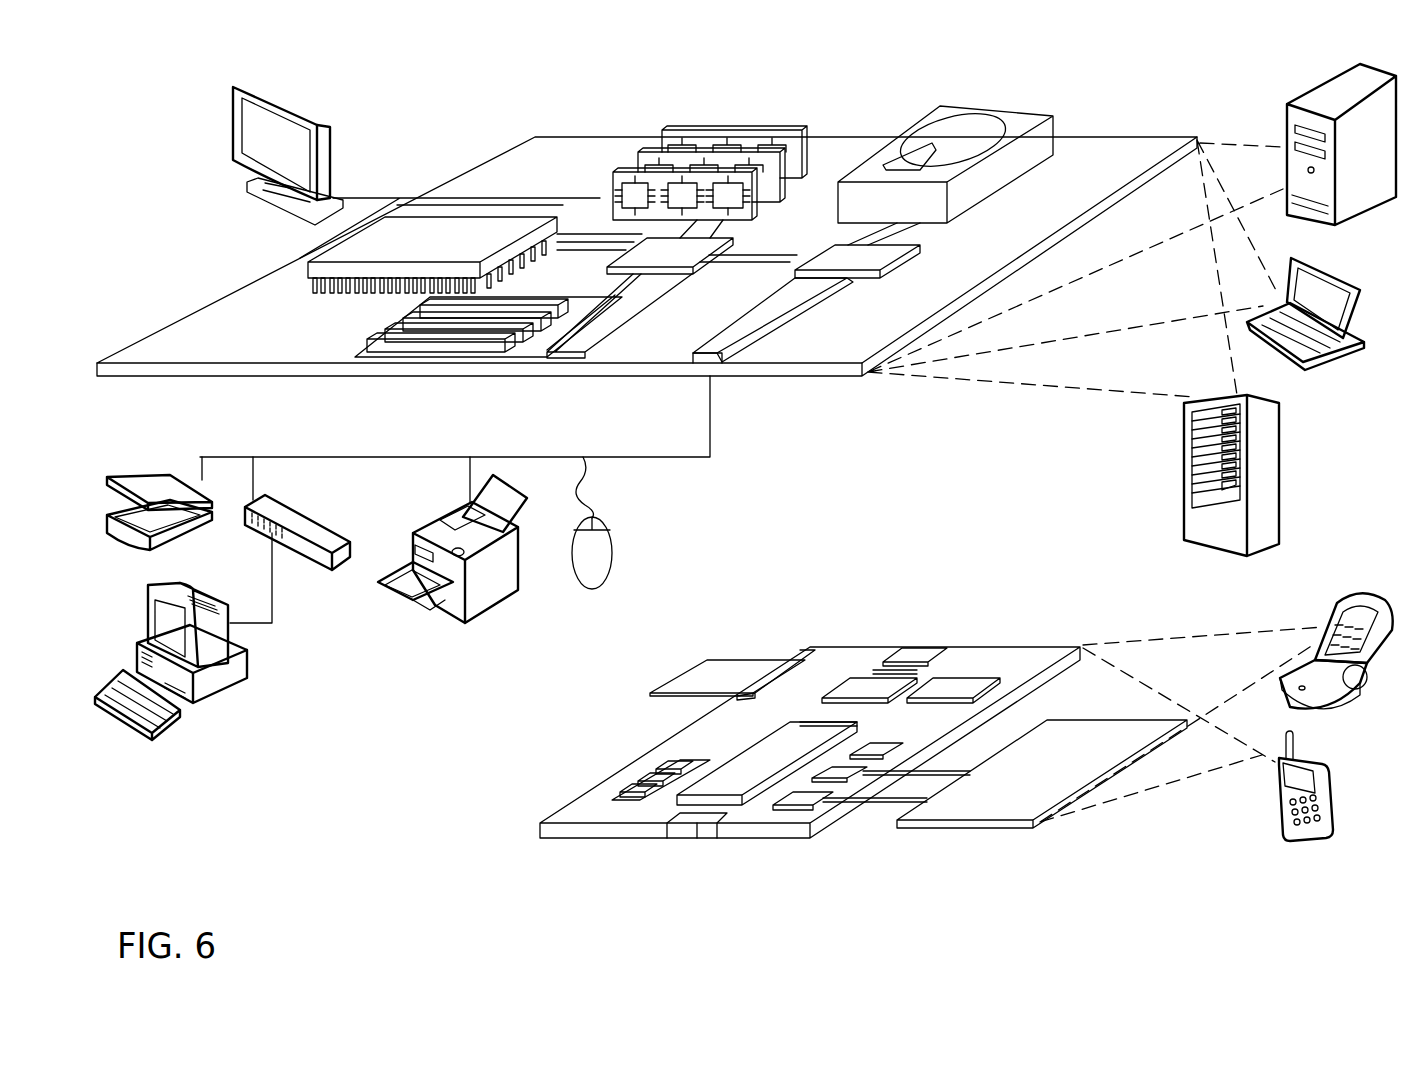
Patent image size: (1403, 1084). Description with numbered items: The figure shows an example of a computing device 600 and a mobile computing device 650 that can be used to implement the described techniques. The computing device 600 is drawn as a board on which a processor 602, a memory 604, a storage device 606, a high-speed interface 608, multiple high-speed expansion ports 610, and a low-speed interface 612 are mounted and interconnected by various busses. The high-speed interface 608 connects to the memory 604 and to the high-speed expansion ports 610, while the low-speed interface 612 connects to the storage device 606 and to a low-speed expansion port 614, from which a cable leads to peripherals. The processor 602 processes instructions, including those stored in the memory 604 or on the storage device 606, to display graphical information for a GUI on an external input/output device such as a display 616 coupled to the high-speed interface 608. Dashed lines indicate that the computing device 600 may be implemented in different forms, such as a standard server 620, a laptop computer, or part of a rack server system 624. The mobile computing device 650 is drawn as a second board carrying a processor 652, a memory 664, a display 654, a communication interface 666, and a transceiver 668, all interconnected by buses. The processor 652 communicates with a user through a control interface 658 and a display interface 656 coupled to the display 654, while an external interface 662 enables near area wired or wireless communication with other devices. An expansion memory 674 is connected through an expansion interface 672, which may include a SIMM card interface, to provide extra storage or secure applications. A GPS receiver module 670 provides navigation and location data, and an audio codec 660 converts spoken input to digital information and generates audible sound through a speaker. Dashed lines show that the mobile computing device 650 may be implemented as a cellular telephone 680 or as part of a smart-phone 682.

The computing device 600 is at (450, 100).
The processor 602 is at (318, 270).
The memory 604 is at (668, 130).
The storage device 606 is at (935, 125).
The high-speed interface 608 is at (643, 252).
The high-speed expansion ports 610 is at (387, 330).
The low-speed interface 612 is at (833, 250).
The low-speed expansion port 614 is at (747, 374).
The display 616 is at (236, 84).
The standard server 620 is at (1287, 125).
The rack server system 624 is at (1187, 501).
The mobile computing device 650 is at (508, 838).
The processor 652 is at (735, 790).
The display 654 is at (997, 808).
The display interface 656 is at (808, 793).
The control interface 658 is at (847, 770).
The audio codec 660 is at (877, 750).
The external interface 662 is at (698, 824).
The memory 664 is at (660, 780).
The communication interface 666 is at (870, 690).
The transceiver 668 is at (957, 687).
The GPS receiver module 670 is at (923, 648).
The expansion interface 672 is at (787, 660).
The expansion memory 674 is at (710, 660).
The cellular telephone 680 is at (1338, 600).
The smart-phone 682 is at (1277, 797).